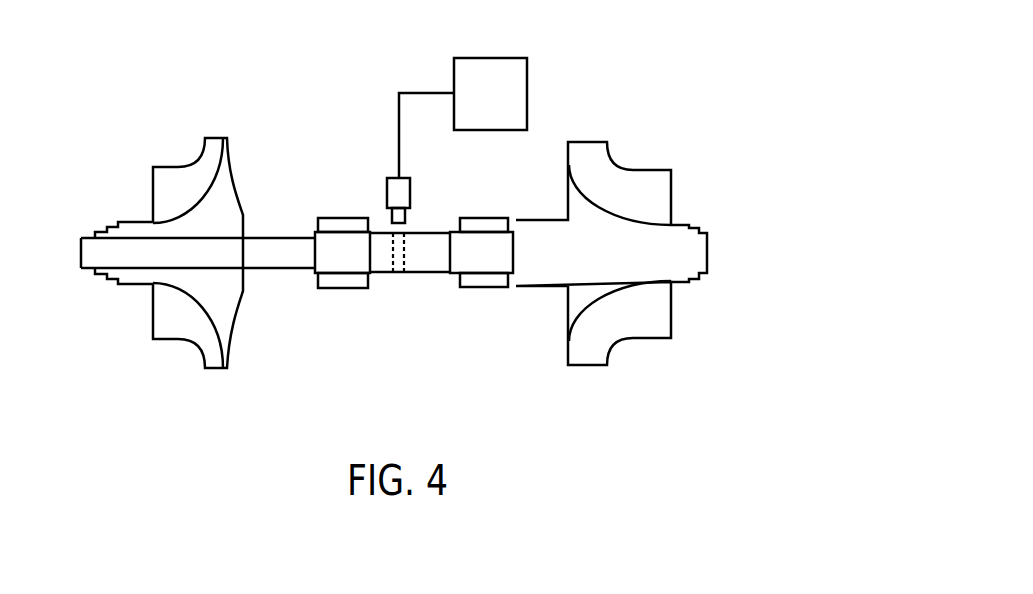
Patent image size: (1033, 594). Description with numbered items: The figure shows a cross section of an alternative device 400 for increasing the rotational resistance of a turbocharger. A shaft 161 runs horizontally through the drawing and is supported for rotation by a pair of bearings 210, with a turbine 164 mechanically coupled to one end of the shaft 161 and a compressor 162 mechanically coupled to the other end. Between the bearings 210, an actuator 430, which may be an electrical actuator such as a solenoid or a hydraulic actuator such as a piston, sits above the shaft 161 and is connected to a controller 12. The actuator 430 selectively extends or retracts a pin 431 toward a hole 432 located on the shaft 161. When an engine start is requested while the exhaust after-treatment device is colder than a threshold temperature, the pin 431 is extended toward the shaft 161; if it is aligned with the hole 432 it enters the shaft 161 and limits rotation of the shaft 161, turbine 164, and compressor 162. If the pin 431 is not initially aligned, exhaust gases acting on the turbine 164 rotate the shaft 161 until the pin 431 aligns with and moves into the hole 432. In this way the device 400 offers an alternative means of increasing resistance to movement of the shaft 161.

The device 400 is at (692, 52).
The controller 12 is at (478, 106).
The shaft 161 is at (263, 268).
The compressor 162 is at (225, 368).
The turbine 164 is at (592, 365).
The bearings 210 is at (343, 218).
The actuator 430 is at (409, 178).
The pin 431 is at (405, 220).
The hole 432 is at (397, 272).